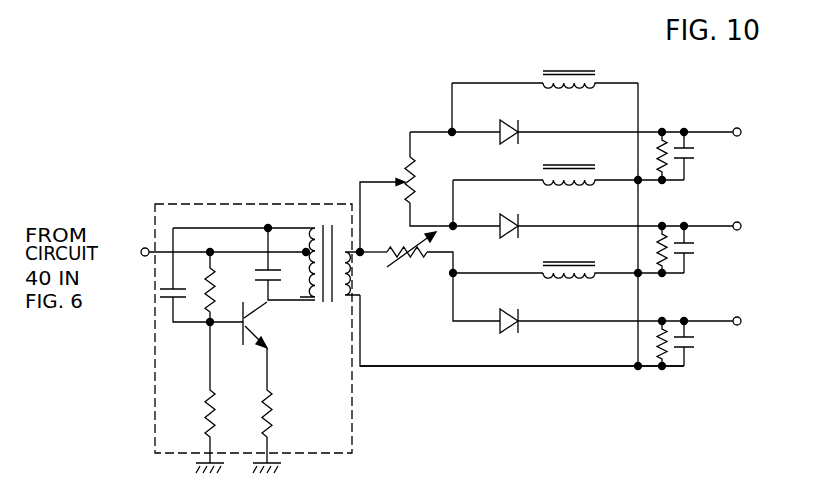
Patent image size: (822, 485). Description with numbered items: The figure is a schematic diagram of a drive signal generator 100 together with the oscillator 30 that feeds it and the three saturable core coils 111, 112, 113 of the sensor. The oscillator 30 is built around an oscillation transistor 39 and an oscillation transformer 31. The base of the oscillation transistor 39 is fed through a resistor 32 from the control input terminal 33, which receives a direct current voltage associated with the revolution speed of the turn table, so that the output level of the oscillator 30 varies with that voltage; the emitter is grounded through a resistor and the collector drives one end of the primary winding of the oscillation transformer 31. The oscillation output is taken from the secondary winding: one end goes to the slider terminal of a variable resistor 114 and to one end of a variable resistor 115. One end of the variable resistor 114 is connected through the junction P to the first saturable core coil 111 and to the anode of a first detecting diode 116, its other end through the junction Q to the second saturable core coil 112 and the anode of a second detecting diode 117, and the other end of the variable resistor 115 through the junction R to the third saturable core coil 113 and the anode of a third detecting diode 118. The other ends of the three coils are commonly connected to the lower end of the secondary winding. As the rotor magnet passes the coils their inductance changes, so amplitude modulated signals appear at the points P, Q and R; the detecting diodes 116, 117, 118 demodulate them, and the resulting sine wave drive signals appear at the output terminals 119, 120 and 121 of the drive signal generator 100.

The oscillator 30 is at (233, 205).
The oscillation transformer 31 is at (326, 226).
The resistor 32 is at (208, 297).
The control input terminal 33 is at (144, 258).
The oscillation transistor 39 is at (256, 323).
The drive signal generator 100 is at (475, 368).
The first saturable core coil 111 is at (566, 70).
The second saturable core coil 112 is at (567, 165).
The third saturable core coil 113 is at (569, 261).
The variable resistor 114 is at (416, 164).
The variable resistor 115 is at (406, 262).
The first detecting diode 116 is at (504, 123).
The second detecting diode 117 is at (512, 219).
The third detecting diode 118 is at (510, 313).
The first output terminal 119 is at (735, 137).
The second output terminal 120 is at (735, 231).
The third output terminal 121 is at (735, 326).
The junction P is at (450, 130).
The junction Q is at (452, 225).
The junction R is at (452, 275).